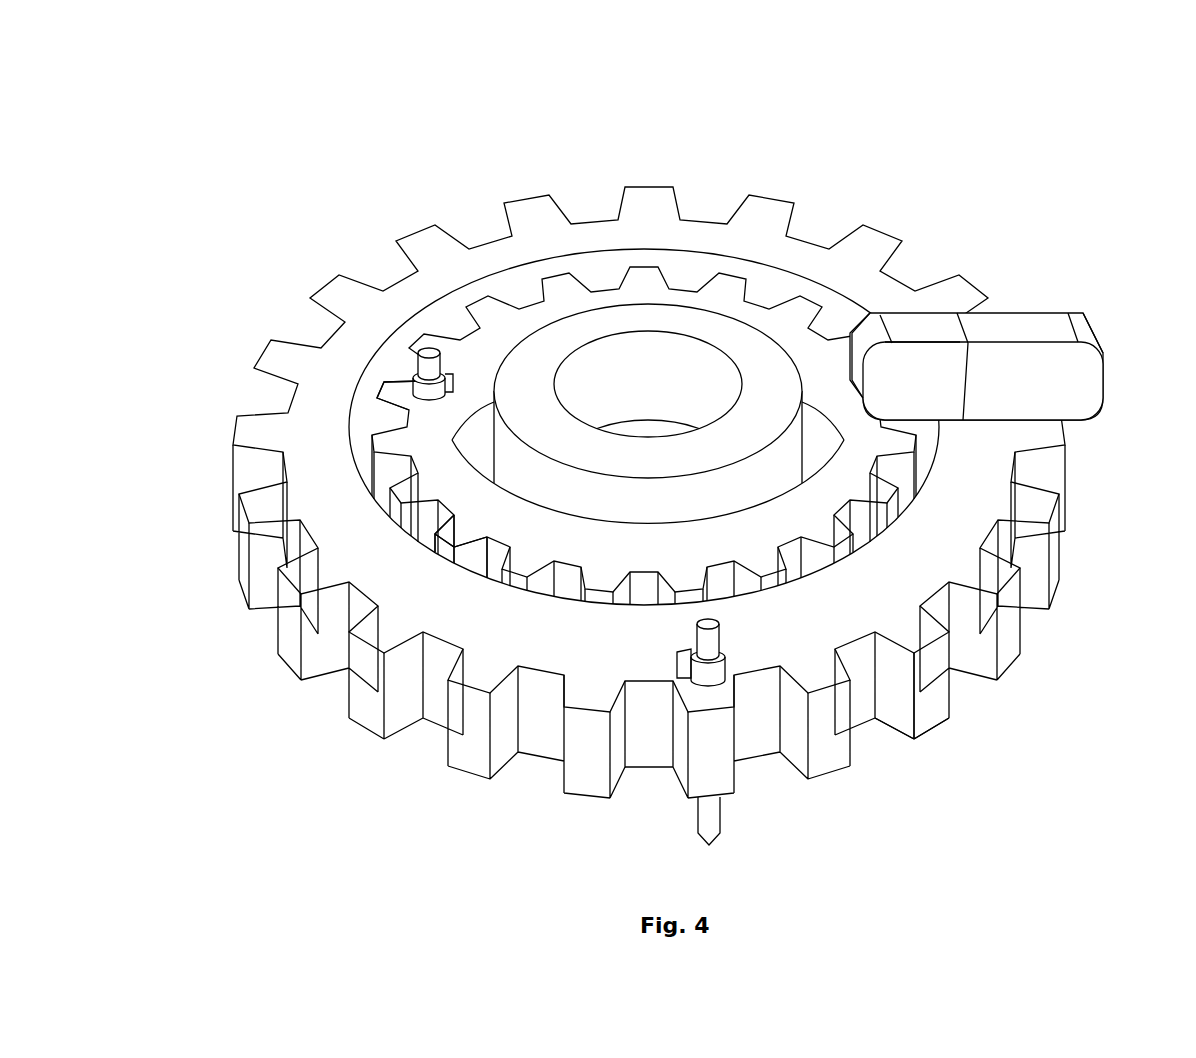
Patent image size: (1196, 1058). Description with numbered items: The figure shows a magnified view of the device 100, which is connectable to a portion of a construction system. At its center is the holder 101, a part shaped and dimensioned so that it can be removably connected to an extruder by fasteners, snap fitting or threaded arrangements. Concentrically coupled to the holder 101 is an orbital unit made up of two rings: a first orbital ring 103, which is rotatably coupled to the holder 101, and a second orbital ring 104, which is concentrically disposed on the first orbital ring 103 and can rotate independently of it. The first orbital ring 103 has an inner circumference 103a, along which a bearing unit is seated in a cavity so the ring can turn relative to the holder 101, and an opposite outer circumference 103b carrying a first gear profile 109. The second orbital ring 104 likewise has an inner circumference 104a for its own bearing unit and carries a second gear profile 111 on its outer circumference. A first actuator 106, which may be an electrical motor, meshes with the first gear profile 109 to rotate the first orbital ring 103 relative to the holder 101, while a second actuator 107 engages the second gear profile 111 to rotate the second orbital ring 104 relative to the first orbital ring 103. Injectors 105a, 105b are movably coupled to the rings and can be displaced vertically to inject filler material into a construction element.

The device 100 is at (223, 145).
The holder 101 is at (500, 300).
The first orbital ring 103 is at (523, 436).
The inner circumference of the first orbital ring 103a is at (389, 392).
The outer circumference of the first orbital ring 103b is at (457, 523).
The second orbital ring 104 is at (630, 501).
The inner circumference of the second orbital ring 104a is at (437, 307).
The injector 105a is at (415, 360).
The injector 105b is at (720, 812).
The first actuator 106 is at (912, 343).
The second actuator 107 is at (1087, 313).
The first gear profile 109 is at (297, 487).
The second gear profile 111 is at (950, 717).